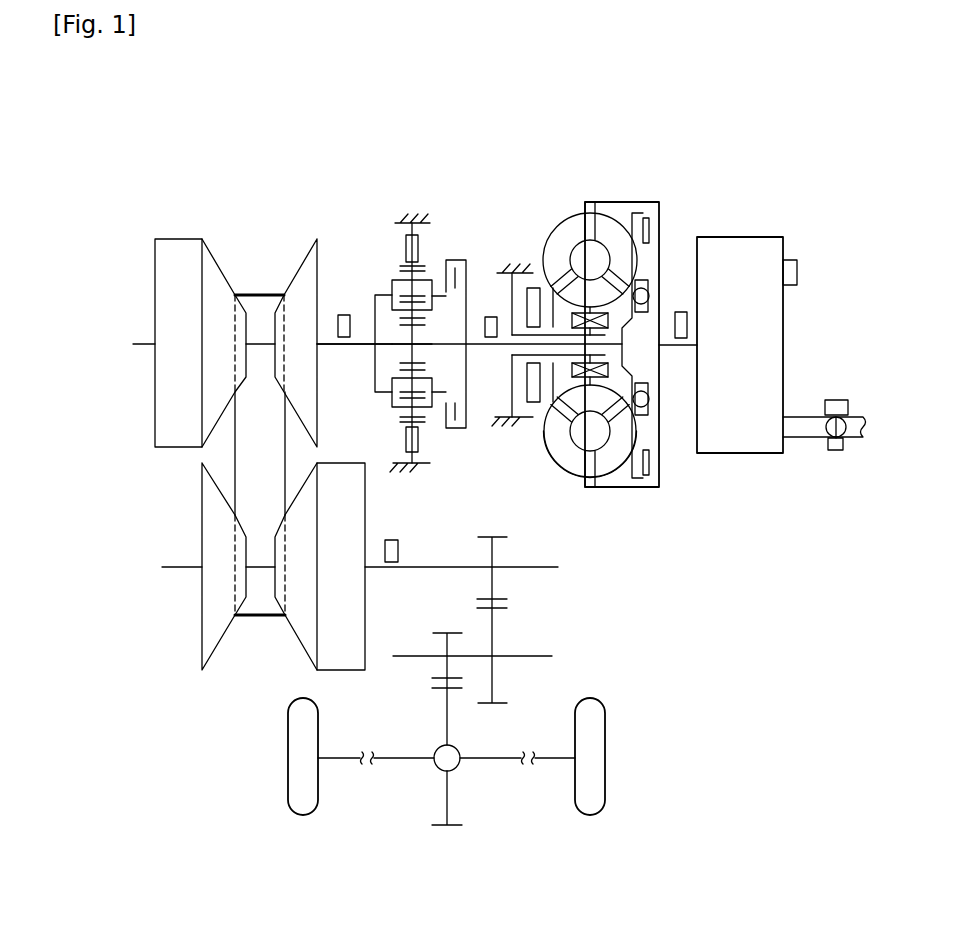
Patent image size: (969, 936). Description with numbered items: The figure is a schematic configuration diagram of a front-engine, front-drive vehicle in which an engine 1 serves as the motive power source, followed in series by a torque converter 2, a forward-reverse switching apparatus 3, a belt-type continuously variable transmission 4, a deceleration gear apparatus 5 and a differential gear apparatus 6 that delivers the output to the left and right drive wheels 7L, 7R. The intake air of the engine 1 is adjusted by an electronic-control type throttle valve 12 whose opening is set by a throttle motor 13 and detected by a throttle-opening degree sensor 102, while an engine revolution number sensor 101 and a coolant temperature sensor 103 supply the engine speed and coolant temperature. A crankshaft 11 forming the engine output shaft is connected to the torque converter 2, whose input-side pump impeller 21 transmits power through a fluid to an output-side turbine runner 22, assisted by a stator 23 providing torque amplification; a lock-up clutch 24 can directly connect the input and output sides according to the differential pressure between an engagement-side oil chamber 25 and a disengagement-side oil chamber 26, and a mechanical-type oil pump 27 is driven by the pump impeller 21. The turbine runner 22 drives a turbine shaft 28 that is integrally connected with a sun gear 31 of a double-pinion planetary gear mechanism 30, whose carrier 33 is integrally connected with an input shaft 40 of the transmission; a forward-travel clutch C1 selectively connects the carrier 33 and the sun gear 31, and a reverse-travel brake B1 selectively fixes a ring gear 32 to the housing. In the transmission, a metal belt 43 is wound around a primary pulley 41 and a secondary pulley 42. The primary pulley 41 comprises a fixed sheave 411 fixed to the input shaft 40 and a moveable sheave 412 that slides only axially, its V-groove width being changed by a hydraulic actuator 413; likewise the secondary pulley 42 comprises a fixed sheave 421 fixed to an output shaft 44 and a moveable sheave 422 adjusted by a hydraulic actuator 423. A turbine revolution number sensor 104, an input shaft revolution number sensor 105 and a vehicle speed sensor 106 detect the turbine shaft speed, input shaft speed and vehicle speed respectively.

The engine 1 is at (748, 228).
The torque converter 2 is at (615, 197).
The forward-reverse switching apparatus 3 is at (425, 188).
The belt-type continuously variable transmission 4 is at (254, 451).
The deceleration gear apparatus 5 is at (525, 642).
The differential gear apparatus 6 is at (433, 763).
The left drive wheel 7L is at (287, 750).
The right drive wheel 7R is at (606, 768).
The crankshaft 11 is at (676, 350).
The throttle valve 12 is at (845, 440).
The throttle motor 13 is at (838, 399).
The pump impeller 21 is at (566, 457).
The turbine runner 22 is at (608, 465).
The stator 23 is at (573, 398).
The lock-up clutch 24 is at (651, 468).
The engagement-side oil chamber 25 is at (600, 487).
The disengagement-side oil chamber 26 is at (655, 440).
The mechanical-type oil pump 27 is at (532, 288).
The turbine shaft 28 is at (493, 348).
The planetary gear mechanism 30 is at (388, 246).
The sun gear 31 is at (405, 356).
The ring gear 32 is at (425, 430).
The carrier 33 is at (433, 392).
The input shaft 40 is at (346, 350).
The primary pulley 41 is at (202, 297).
The secondary pulley 42 is at (275, 621).
The metal belt 43 is at (254, 292).
The output shaft 44 is at (437, 570).
The engine revolution number sensor 101 is at (676, 312).
The throttle-opening degree sensor 102 is at (828, 446).
The coolant temperature sensor 103 is at (798, 272).
The turbine revolution number sensor 104 is at (490, 315).
The input shaft revolution number sensor 105 is at (341, 315).
The vehicle speed sensor 106 is at (397, 540).
The fixed sheave 411 is at (300, 278).
The moveable sheave 412 is at (218, 268).
The hydraulic actuator 413 is at (165, 291).
The fixed sheave 421 is at (211, 630).
The moveable sheave 422 is at (305, 633).
The hydraulic actuator 423 is at (368, 470).
The forward-travel clutch C1 is at (421, 243).
The reverse-travel brake B1 is at (442, 268).